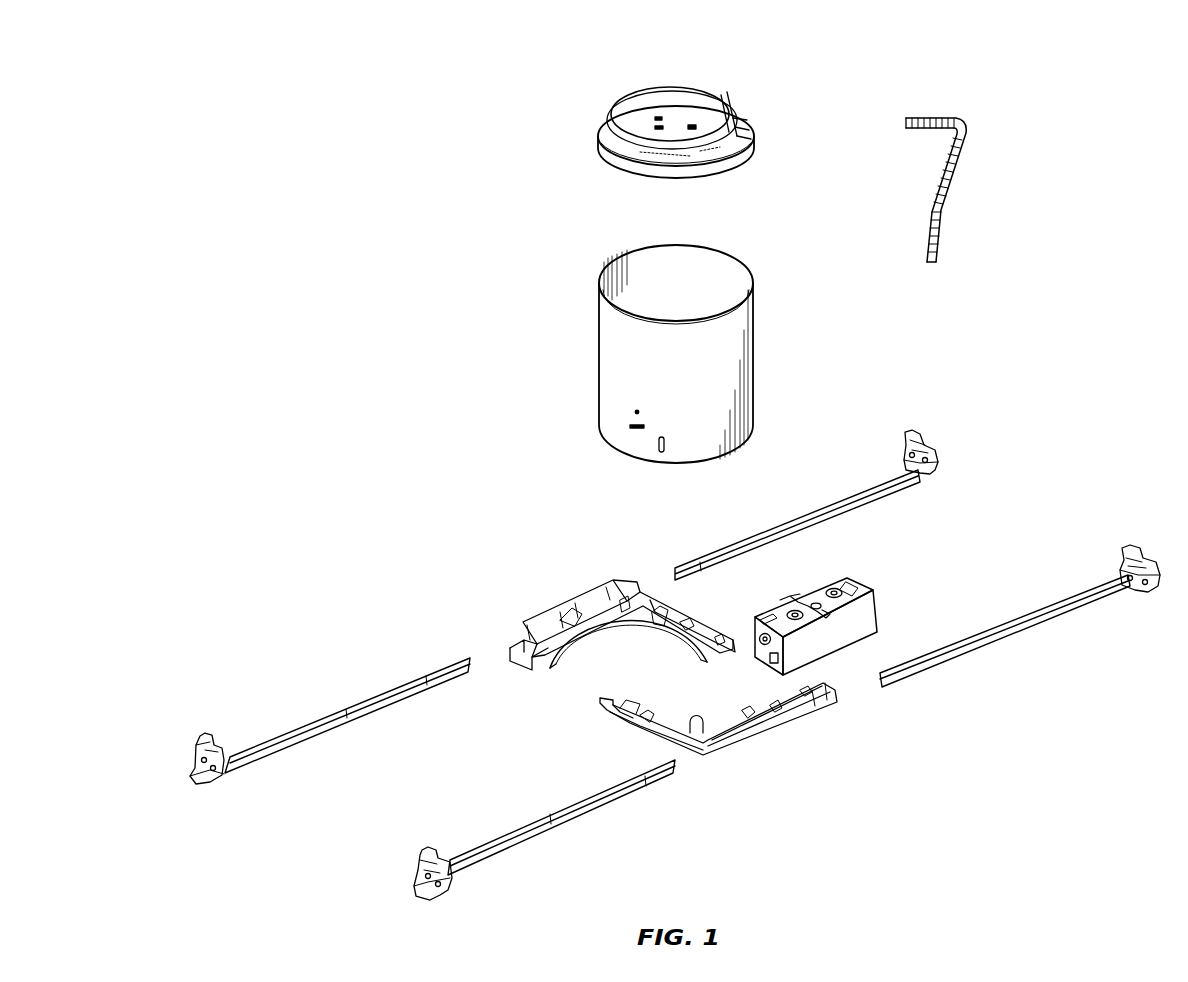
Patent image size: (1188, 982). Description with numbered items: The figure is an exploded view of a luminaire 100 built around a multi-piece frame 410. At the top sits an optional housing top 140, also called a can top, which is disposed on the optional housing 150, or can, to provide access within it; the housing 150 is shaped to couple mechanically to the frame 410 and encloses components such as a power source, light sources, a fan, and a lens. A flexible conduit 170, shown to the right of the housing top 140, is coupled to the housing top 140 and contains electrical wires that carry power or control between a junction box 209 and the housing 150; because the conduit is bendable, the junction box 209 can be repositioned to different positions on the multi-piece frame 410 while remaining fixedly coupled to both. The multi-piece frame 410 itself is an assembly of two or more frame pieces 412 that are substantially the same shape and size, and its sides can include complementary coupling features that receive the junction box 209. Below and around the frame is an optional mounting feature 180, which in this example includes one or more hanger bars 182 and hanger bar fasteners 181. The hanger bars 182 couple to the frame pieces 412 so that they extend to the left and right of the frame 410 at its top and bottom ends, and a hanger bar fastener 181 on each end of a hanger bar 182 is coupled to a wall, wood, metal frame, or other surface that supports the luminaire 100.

The luminaire 100 is at (284, 64).
The housing top 140 is at (676, 93).
The housing 150 is at (598, 354).
The flexible conduit 170 is at (958, 178).
The mounting feature 180 is at (626, 812).
The hanger bar fastener 181 is at (449, 889).
The hanger bar 182 is at (402, 685).
The junction box 209 is at (866, 570).
The multi-piece frame 410 is at (552, 544).
The frame piece 412 is at (563, 603).